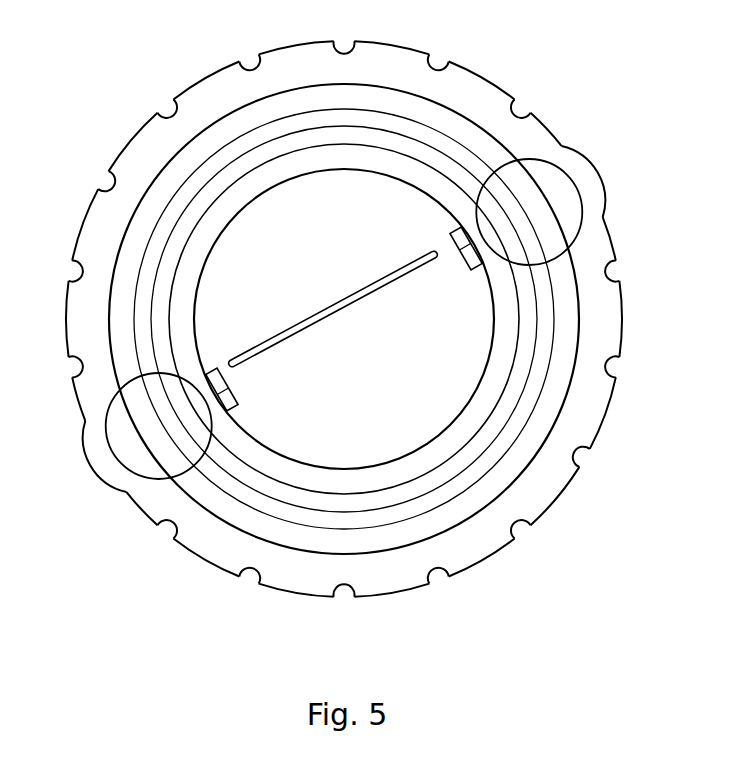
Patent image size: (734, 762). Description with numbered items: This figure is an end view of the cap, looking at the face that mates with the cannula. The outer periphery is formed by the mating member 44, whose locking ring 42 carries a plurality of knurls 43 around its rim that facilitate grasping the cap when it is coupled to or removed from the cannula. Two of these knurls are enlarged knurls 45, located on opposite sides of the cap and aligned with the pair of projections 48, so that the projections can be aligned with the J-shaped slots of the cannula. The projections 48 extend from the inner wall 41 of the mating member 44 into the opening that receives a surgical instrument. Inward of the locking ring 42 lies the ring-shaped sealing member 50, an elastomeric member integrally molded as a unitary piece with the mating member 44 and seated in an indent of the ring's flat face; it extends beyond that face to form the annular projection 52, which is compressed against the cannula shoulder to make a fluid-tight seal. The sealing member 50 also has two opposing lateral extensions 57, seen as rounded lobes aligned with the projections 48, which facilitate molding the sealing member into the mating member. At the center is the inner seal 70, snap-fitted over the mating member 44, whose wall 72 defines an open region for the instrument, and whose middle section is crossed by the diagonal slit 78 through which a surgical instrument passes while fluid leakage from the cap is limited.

The inner wall 41 is at (477, 417).
The locking ring 42 is at (290, 573).
The knurls 43 is at (268, 587).
The mating member 44 is at (480, 470).
The enlarged knurls 45 is at (102, 473).
The projections 48 is at (230, 408).
The sealing member 50 is at (370, 503).
The annular projection 52 is at (508, 517).
The lateral extensions 57 is at (195, 403).
The inner seal 70 is at (470, 318).
The wall 72 is at (472, 360).
The diagonal slit 78 is at (415, 250).